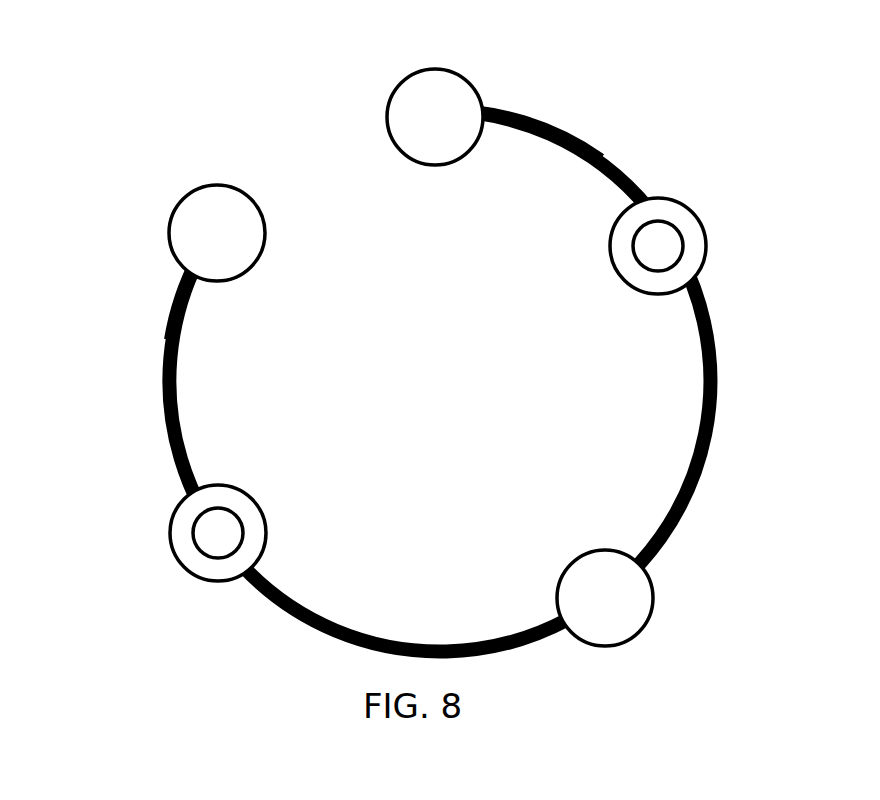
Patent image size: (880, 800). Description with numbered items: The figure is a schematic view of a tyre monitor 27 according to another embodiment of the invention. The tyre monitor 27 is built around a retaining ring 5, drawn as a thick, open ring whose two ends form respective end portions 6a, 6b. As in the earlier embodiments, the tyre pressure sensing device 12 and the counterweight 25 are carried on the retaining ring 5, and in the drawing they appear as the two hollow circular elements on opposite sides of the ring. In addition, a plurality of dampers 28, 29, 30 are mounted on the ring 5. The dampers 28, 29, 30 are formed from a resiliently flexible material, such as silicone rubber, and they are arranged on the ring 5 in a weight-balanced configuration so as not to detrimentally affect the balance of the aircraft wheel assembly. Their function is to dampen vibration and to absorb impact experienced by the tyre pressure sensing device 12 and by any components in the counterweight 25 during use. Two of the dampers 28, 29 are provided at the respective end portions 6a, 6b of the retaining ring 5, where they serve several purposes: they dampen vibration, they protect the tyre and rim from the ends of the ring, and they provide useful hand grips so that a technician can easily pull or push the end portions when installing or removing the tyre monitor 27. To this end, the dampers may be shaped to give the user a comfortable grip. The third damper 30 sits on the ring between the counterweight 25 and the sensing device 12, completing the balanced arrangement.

The retaining ring 5 is at (707, 459).
The end portion of the retaining ring 6a is at (177, 282).
The end portion of the retaining ring 6b is at (500, 118).
The tyre pressure sensing device 12 is at (663, 235).
The counterweight 25 is at (212, 537).
The tyre monitor 27 is at (135, 165).
The damper 28 is at (185, 232).
The damper 29 is at (472, 85).
The damper 30 is at (653, 580).